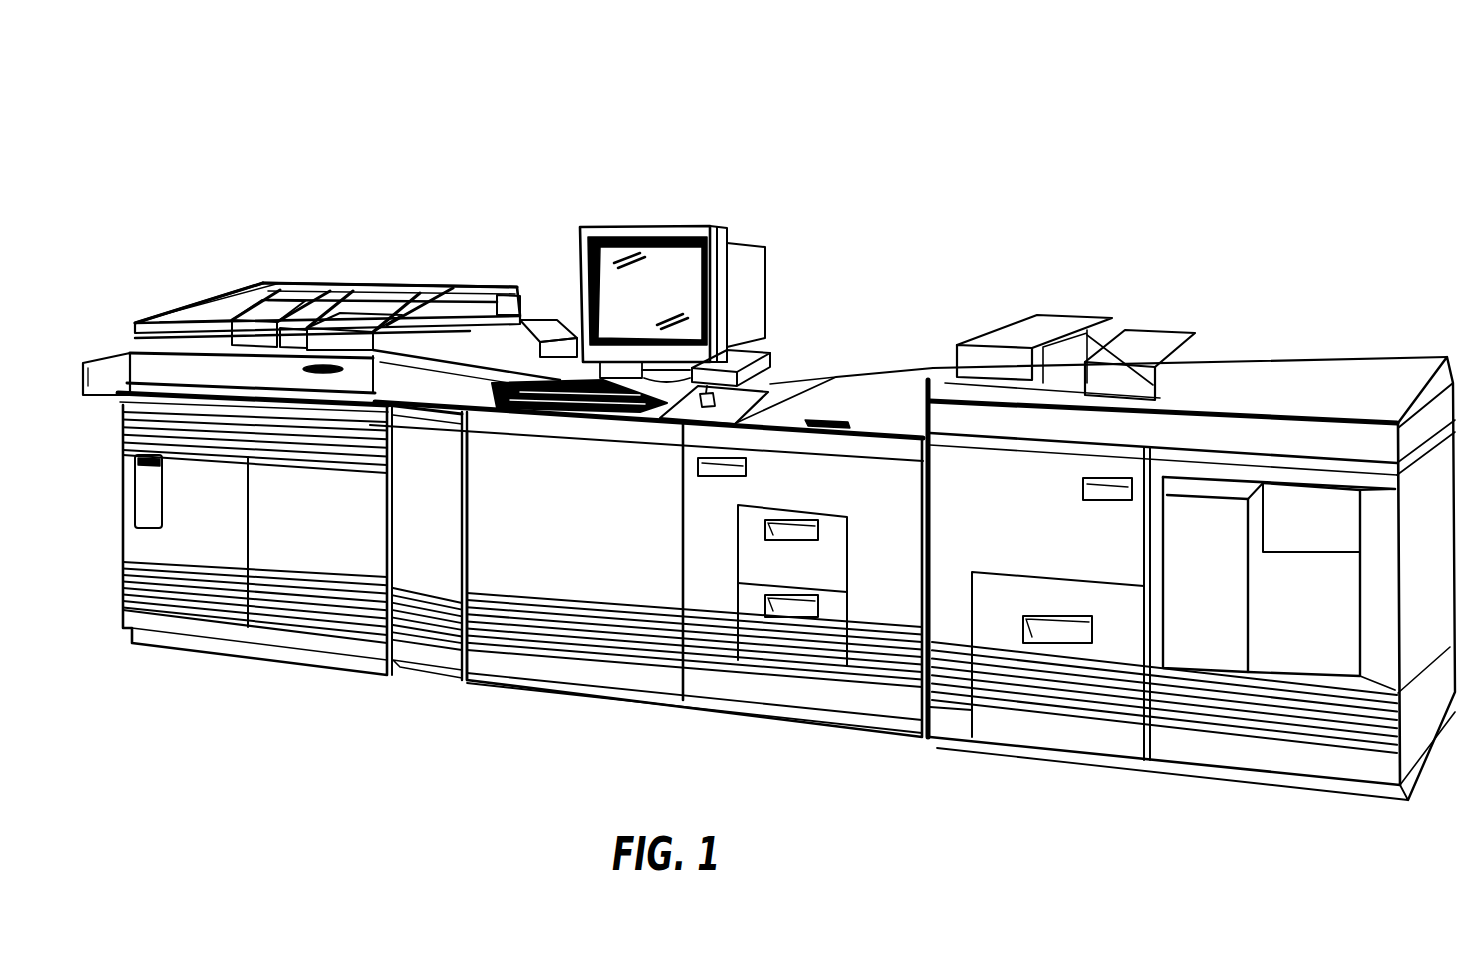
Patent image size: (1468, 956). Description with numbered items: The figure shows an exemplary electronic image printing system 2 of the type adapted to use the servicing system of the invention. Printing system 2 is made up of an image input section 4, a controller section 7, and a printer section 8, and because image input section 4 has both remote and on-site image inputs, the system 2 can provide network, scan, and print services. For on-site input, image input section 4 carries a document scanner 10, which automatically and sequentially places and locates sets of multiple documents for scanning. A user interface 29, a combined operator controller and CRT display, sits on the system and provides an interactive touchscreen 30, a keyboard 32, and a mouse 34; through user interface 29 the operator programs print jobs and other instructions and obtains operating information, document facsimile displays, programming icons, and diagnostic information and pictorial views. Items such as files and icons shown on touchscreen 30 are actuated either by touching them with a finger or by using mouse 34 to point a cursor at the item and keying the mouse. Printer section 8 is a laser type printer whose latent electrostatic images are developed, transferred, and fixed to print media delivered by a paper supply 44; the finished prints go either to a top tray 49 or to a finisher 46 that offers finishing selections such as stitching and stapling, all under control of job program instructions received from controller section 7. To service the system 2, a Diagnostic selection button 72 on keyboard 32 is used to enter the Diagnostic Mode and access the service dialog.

The image printing system 2 is at (903, 90).
The image input section 4 is at (369, 244).
The controller section 7 is at (108, 536).
The printer section 8 is at (877, 280).
The document scanner 10 is at (223, 310).
The user interface 29 is at (675, 204).
The interactive touchscreen 30 is at (610, 298).
The keyboard 32 is at (563, 423).
The mouse 34 is at (667, 427).
The paper supply 44 is at (873, 587).
The finisher 46 is at (1265, 750).
The top tray 49 is at (1125, 333).
The Diagnostic selection button 72 is at (502, 423).